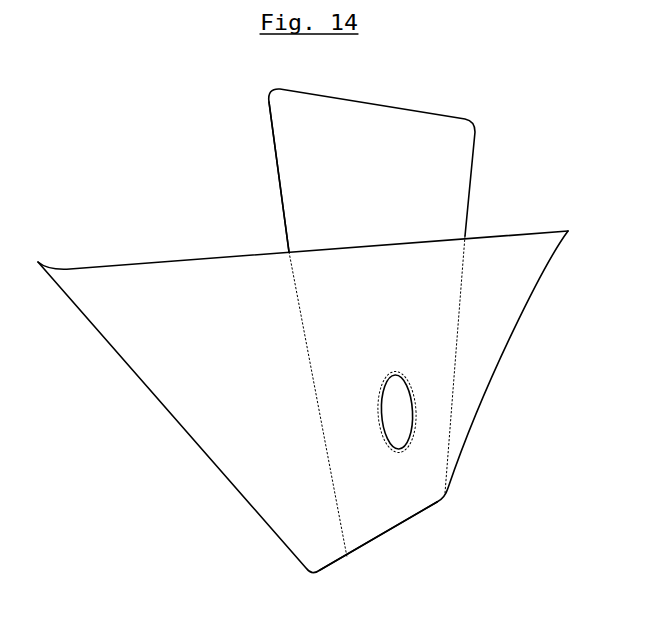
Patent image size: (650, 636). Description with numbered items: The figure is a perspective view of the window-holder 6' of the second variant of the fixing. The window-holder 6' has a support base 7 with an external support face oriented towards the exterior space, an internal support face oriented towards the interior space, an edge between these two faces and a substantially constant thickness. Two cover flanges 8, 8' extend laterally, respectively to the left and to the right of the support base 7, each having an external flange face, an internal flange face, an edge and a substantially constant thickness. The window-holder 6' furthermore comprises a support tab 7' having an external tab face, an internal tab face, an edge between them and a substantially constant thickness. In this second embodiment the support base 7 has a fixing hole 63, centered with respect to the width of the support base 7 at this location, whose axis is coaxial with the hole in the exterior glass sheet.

The window-holder 6' is at (411, 323).
The support tab 7' is at (252, 176).
The cover flange 8 is at (303, 244).
The cover flange 8' is at (521, 366).
The support base 7 is at (380, 535).
The fixing hole 63 is at (413, 403).